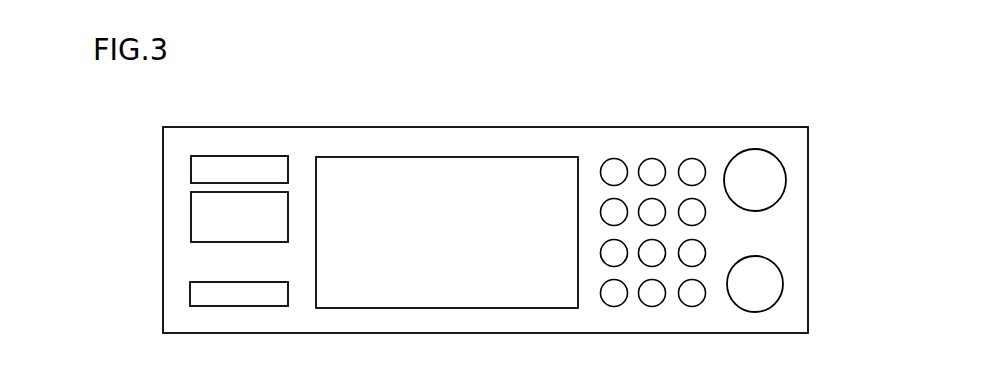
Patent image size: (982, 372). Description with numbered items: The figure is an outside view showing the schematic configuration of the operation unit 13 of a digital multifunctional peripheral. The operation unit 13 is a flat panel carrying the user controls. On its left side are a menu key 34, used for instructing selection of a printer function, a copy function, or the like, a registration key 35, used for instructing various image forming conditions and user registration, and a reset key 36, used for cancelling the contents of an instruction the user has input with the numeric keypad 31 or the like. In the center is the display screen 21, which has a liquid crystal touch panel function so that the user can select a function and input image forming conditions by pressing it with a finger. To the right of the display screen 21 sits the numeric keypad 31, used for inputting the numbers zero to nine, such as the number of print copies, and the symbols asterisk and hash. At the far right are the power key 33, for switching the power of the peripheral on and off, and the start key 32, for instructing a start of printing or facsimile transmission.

The operation unit 13 is at (766, 127).
The display screen 21 is at (541, 157).
The numeric keypad 31 is at (660, 136).
The start key 32 is at (783, 284).
The power key 33 is at (786, 180).
The menu key 34 is at (191, 172).
The registration key 35 is at (191, 212).
The reset key 36 is at (190, 297).